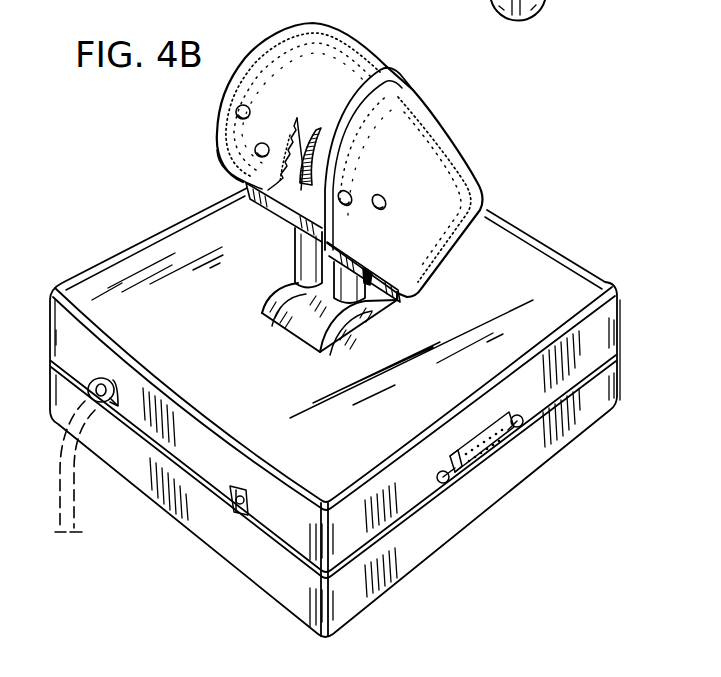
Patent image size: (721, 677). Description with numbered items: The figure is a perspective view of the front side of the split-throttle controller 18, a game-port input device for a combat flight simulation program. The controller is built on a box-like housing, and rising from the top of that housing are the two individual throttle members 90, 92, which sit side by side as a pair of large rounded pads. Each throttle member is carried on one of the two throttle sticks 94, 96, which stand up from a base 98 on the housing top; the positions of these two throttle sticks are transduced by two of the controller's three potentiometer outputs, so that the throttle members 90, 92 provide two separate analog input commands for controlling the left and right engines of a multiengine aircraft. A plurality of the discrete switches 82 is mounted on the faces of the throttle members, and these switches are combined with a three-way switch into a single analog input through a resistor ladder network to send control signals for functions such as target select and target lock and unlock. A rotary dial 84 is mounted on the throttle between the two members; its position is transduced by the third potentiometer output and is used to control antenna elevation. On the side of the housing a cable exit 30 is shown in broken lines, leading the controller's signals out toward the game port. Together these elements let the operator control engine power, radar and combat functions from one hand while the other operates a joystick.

The split-throttle controller 18 is at (563, 515).
The cable grommet 30 is at (58, 488).
The discrete switches 82 is at (255, 148).
The rotary dial 84 is at (308, 198).
The throttle member 90 is at (453, 148).
The throttle member 92 is at (284, 50).
The throttle stick 94 is at (357, 298).
The throttle stick 96 is at (300, 246).
The base 98 is at (264, 387).